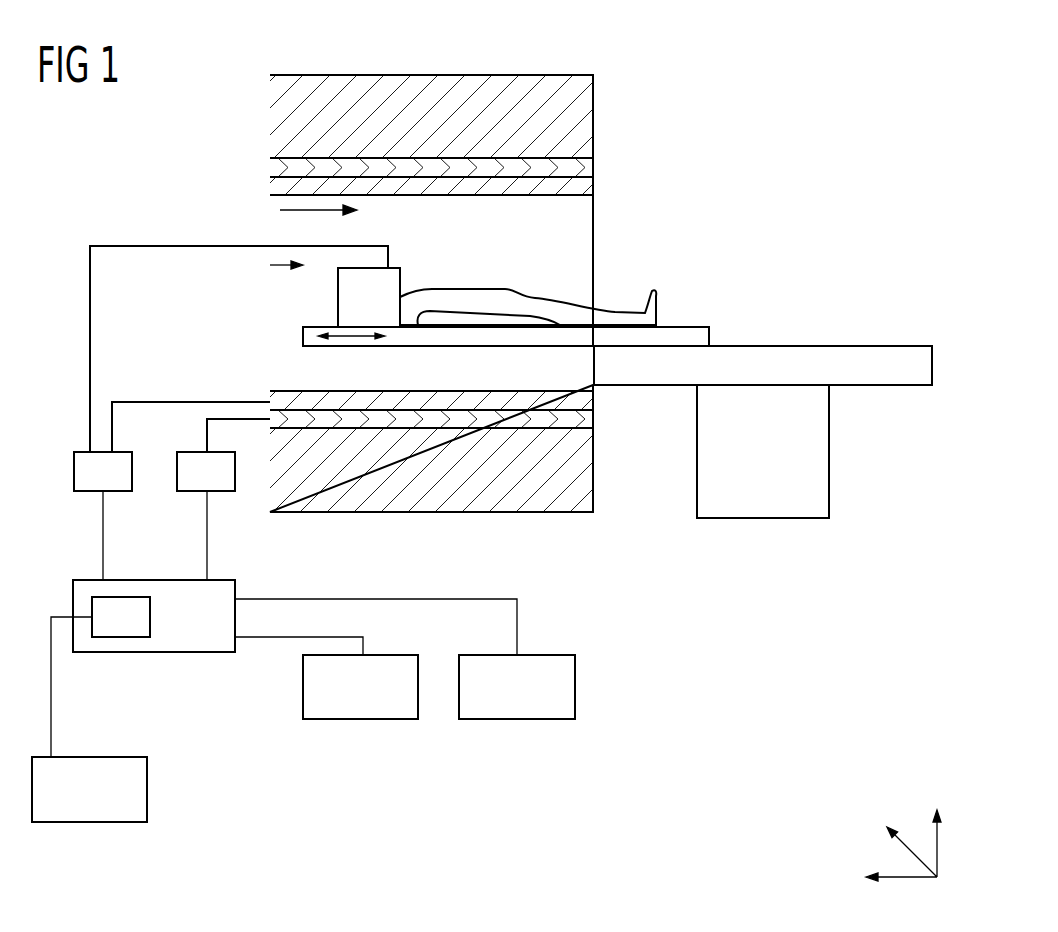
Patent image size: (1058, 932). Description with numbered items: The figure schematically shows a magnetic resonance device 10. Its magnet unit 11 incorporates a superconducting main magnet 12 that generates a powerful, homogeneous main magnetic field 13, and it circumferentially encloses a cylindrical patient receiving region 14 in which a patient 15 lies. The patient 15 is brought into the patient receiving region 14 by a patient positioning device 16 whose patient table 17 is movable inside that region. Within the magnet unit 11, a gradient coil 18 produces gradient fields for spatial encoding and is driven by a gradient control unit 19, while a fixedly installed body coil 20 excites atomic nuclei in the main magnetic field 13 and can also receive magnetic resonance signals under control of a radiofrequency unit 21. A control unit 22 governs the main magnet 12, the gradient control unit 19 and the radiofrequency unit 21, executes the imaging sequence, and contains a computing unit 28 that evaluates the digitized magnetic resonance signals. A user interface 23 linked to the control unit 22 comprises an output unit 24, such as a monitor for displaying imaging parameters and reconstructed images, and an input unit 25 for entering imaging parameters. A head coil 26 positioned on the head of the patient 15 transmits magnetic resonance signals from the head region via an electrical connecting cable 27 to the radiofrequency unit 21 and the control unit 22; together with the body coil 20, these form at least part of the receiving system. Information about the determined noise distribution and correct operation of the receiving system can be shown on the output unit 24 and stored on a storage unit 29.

The magnetic resonance device 10 is at (775, 165).
The magnet unit 11 is at (258, 127).
The superconducting main magnet 12 is at (572, 122).
The main magnetic field 13 is at (305, 210).
The patient receiving region 14 is at (270, 265).
The patient 15 is at (612, 315).
The patient positioning device 16 is at (875, 420).
The patient table 17 is at (697, 338).
The gradient coil 18 is at (283, 168).
The gradient control unit 19 is at (220, 491).
The body coil 20 is at (283, 185).
The radiofrequency unit 21 is at (118, 491).
The control unit 22 is at (192, 652).
The user interface 23 is at (432, 785).
The output unit 24 is at (364, 719).
The input unit 25 is at (515, 719).
The head coil 26 is at (415, 265).
The electrical connecting cable 27 is at (110, 246).
The computing unit 28 is at (115, 637).
The storage unit 29 is at (92, 822).